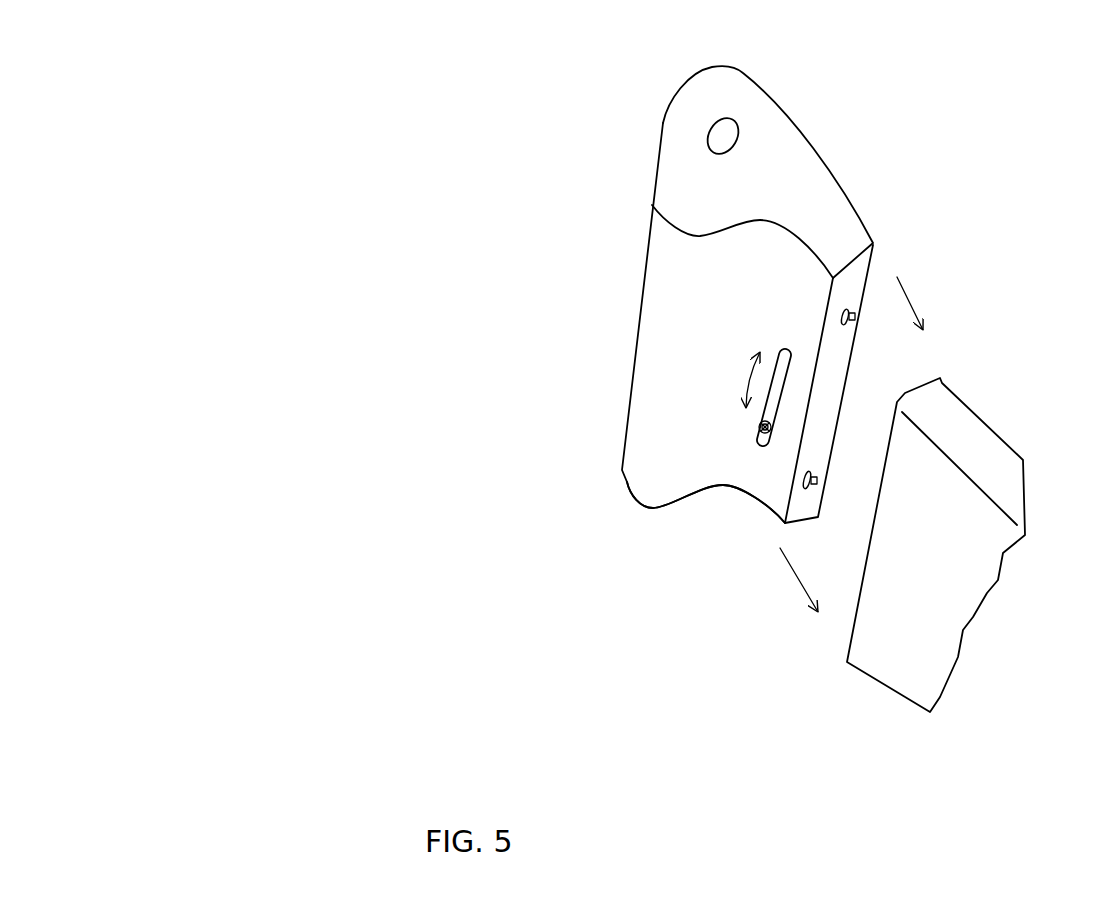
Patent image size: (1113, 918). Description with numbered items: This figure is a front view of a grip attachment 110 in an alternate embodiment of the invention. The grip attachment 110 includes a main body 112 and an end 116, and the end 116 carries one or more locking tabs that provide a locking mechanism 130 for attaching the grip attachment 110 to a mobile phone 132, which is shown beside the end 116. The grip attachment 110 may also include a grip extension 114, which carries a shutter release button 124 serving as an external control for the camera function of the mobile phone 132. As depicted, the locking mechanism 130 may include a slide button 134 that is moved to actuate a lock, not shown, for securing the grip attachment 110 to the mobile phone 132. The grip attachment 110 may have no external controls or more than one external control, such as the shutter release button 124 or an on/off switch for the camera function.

The grip attachment 110 is at (823, 93).
The main body 112 is at (903, 207).
The locking mechanism 130 is at (937, 287).
The end 116 is at (887, 365).
The grip extension 114 is at (598, 527).
The shutter release button 124 is at (706, 143).
The slide button 134 is at (743, 437).
The mobile phone 132 is at (965, 462).